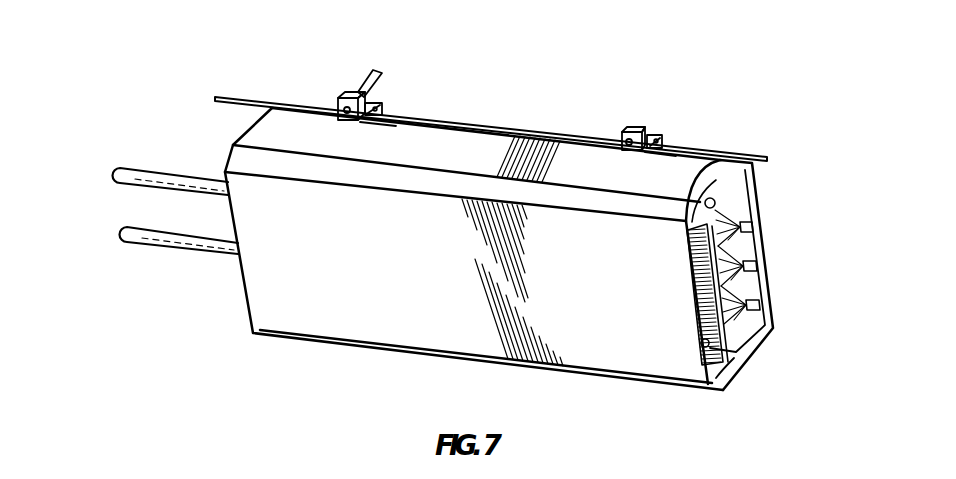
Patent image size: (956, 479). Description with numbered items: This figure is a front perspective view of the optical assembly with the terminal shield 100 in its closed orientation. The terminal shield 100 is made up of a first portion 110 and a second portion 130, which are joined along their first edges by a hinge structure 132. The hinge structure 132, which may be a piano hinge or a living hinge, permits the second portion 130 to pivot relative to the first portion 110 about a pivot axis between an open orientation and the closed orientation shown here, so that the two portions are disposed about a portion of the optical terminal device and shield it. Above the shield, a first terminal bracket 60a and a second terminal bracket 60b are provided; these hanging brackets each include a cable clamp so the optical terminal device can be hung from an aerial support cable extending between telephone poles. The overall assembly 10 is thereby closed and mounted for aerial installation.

The connector assembly 10 is at (812, 266).
The first terminal bracket 60a is at (405, 96).
The second terminal bracket 60b is at (678, 131).
The terminal shield 100 is at (348, 323).
The first portion 110 is at (760, 217).
The second portion 130 is at (500, 350).
The hinge structure 132 is at (748, 351).